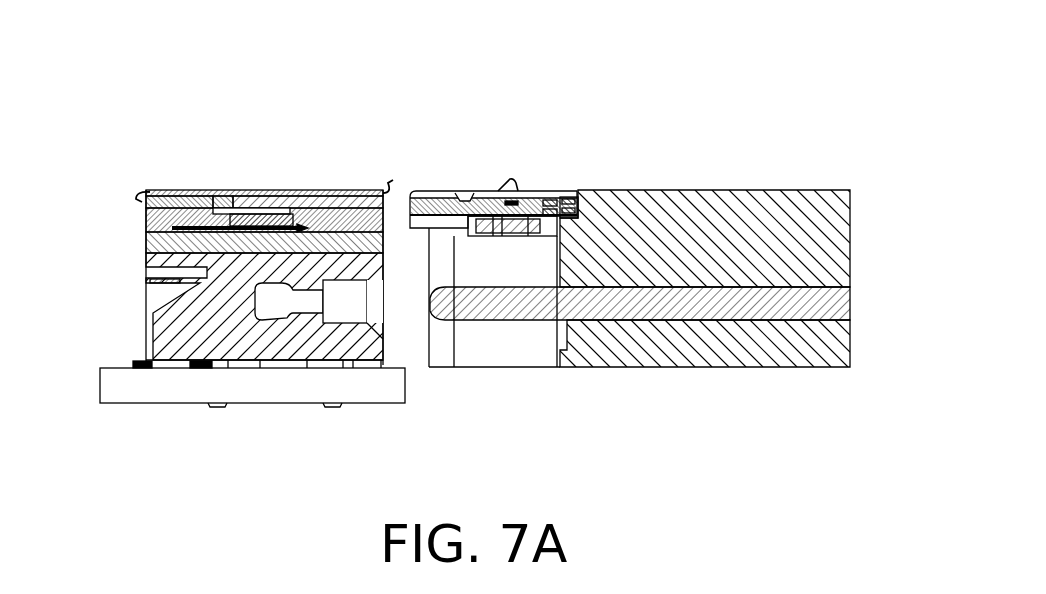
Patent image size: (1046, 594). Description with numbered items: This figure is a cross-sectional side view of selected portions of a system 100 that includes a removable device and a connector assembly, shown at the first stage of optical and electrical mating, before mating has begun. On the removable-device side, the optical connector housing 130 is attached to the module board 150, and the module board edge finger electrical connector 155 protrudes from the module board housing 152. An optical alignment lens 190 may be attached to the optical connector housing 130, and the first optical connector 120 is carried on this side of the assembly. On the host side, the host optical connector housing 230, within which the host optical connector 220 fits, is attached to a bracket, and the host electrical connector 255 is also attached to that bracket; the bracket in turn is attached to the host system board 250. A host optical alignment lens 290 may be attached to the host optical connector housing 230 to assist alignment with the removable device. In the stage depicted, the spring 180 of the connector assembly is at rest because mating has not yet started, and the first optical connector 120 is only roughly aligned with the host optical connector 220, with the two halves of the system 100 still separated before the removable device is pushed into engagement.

The system 100 is at (656, 262).
The first optical connector 120 is at (424, 197).
The optical connector housing 130 is at (517, 243).
The module board 150 is at (848, 292).
The module board housing 152 is at (848, 243).
The module board edge finger electrical connector 155 is at (433, 318).
The spring 180 is at (563, 217).
The optical alignment lens 190 is at (467, 196).
The host optical connector 220 is at (330, 228).
The host optical connector housing 230 is at (147, 224).
The host system board 250 is at (100, 378).
The host electrical connector 255 is at (254, 318).
The host optical alignment lens 290 is at (265, 232).